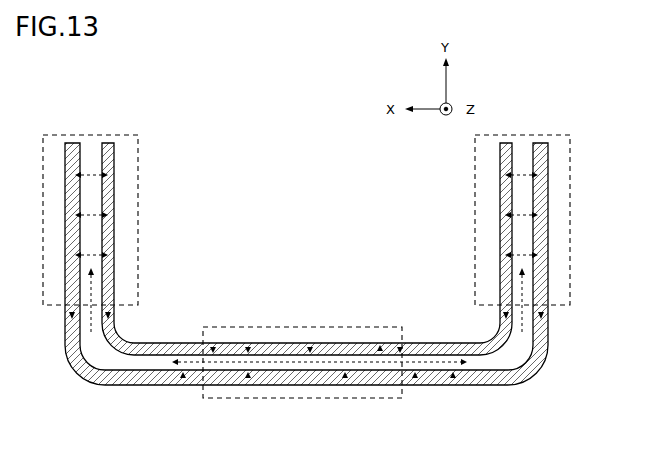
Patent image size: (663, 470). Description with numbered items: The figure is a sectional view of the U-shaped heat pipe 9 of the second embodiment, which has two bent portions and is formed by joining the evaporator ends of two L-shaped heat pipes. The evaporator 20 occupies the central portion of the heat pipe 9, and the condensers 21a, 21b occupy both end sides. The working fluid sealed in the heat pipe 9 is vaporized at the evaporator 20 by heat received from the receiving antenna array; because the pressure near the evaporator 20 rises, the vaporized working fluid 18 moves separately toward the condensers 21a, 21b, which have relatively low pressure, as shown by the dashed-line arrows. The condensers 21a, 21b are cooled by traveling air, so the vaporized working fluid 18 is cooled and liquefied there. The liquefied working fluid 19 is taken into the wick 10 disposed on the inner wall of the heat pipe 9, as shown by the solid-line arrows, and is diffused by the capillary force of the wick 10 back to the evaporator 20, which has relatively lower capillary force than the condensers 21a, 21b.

The U-shaped heat pipe 9 is at (308, 78).
The wick 10 is at (296, 287).
The vaporized working fluid 18 is at (543, 333).
The liquefied working fluid 19 is at (307, 249).
The evaporator 20 is at (302, 394).
The condenser 21a is at (91, 191).
The condenser 21b is at (529, 191).